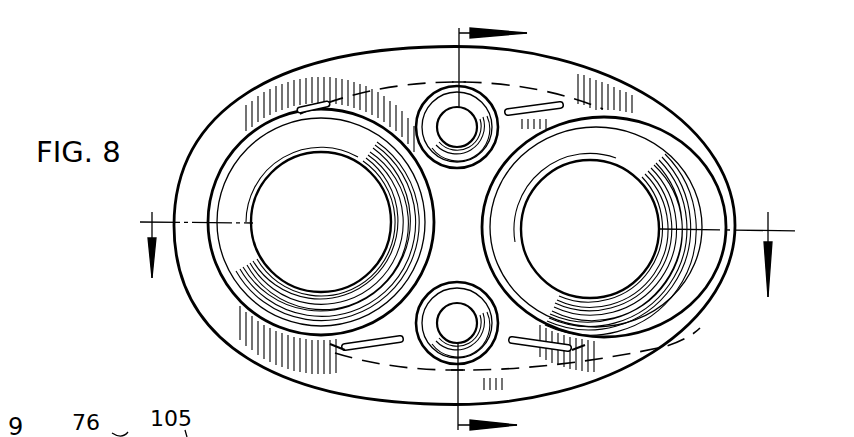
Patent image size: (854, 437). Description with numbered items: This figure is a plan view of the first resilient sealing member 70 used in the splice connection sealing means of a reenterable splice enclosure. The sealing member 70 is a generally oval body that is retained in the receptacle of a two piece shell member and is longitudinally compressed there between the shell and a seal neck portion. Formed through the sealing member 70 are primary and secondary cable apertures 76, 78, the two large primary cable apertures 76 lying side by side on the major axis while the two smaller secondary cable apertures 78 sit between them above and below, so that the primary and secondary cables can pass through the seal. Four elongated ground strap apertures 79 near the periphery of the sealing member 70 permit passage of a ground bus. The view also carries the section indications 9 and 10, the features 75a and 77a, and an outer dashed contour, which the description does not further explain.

The first resilient sealing member 70 is at (195, 118).
The cylinder bore flange 75a is at (198, 227).
The primary cable aperture 76 is at (280, 187).
The gasket outline 77a is at (462, 72).
The secondary cable aperture 78 is at (445, 125).
The ground strap aperture 79 is at (552, 97).
The section line 9- 9 is at (459, 254).
The section line 10- 10 is at (464, 225).